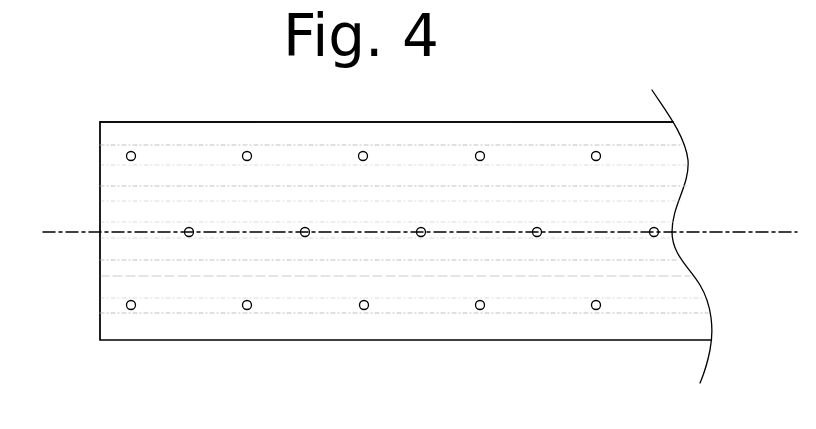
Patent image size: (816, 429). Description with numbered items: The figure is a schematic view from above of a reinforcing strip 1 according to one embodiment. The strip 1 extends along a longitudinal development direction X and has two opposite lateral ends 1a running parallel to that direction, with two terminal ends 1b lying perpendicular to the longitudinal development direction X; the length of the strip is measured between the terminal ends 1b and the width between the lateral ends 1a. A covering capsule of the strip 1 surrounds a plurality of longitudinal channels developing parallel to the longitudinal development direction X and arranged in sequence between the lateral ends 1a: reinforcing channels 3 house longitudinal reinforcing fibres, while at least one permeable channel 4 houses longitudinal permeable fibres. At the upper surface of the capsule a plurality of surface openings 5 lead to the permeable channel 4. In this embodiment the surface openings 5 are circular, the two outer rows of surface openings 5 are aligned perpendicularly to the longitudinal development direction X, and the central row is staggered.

The reinforcing strip 1 is at (449, 68).
The lateral ends 1a is at (555, 122).
The terminal ends 1b is at (98, 326).
The reinforcing channels 3 is at (668, 196).
The permeable channel 4 is at (668, 157).
The surface openings 5 is at (362, 152).
The longitudinal development direction X is at (60, 231).